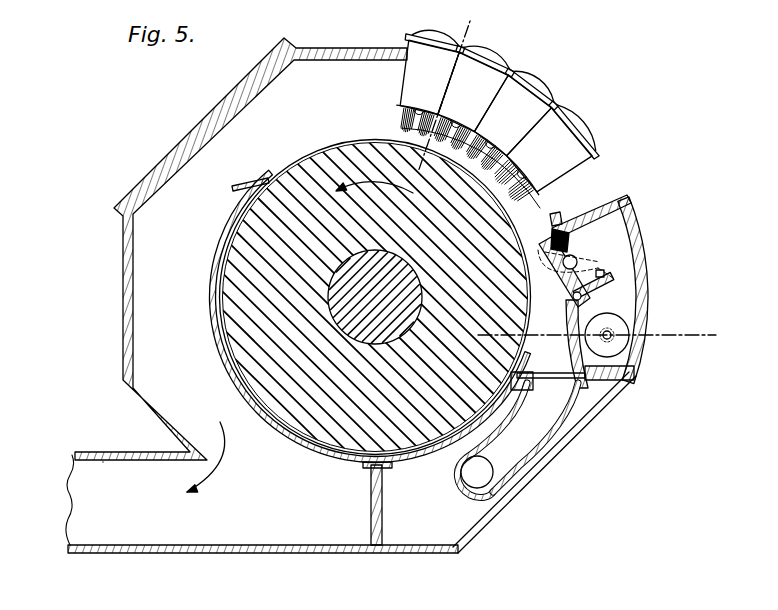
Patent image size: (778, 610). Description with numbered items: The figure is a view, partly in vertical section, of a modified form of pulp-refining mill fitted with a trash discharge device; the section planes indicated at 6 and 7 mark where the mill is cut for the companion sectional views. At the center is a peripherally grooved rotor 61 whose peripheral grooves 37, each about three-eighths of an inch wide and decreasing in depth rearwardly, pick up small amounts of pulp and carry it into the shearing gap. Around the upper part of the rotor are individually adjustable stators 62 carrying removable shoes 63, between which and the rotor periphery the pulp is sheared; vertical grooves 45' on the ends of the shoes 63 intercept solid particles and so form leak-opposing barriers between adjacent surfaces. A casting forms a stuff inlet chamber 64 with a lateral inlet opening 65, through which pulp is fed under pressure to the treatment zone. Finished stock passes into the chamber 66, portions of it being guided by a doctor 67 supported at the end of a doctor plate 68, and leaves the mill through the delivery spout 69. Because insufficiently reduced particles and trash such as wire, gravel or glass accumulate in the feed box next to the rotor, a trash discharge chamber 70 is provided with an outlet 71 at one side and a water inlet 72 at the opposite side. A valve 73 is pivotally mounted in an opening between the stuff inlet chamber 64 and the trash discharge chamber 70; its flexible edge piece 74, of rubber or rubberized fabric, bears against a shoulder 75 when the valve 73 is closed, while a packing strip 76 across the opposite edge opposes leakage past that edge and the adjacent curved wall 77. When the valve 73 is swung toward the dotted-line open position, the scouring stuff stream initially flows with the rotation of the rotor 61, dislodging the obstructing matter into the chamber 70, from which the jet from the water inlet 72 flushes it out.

The section line 6- 6 is at (481, 342).
The section line 7- 7 is at (473, 21).
The peripheral grooves 37 is at (487, 153).
The grooves 45' is at (456, 155).
The rotor 61 is at (327, 407).
The stators 62 is at (483, 80).
The shoes 63 is at (455, 127).
The stuff inlet chamber 64 is at (517, 435).
The lateral inlet opening 65 is at (470, 472).
The chamber 66 is at (351, 295).
The doctor 67 is at (250, 184).
The doctor plate 68 is at (220, 360).
The delivery spout 69 is at (103, 462).
The trash discharge chamber 70 is at (625, 287).
The outlet 71 is at (617, 347).
The water inlet 72 is at (612, 331).
The valve 73 is at (559, 281).
The flexible edge piece 74 is at (569, 233).
The shoulder 75 is at (557, 222).
The packing strip 76 is at (583, 298).
The curved wall 77 is at (607, 278).